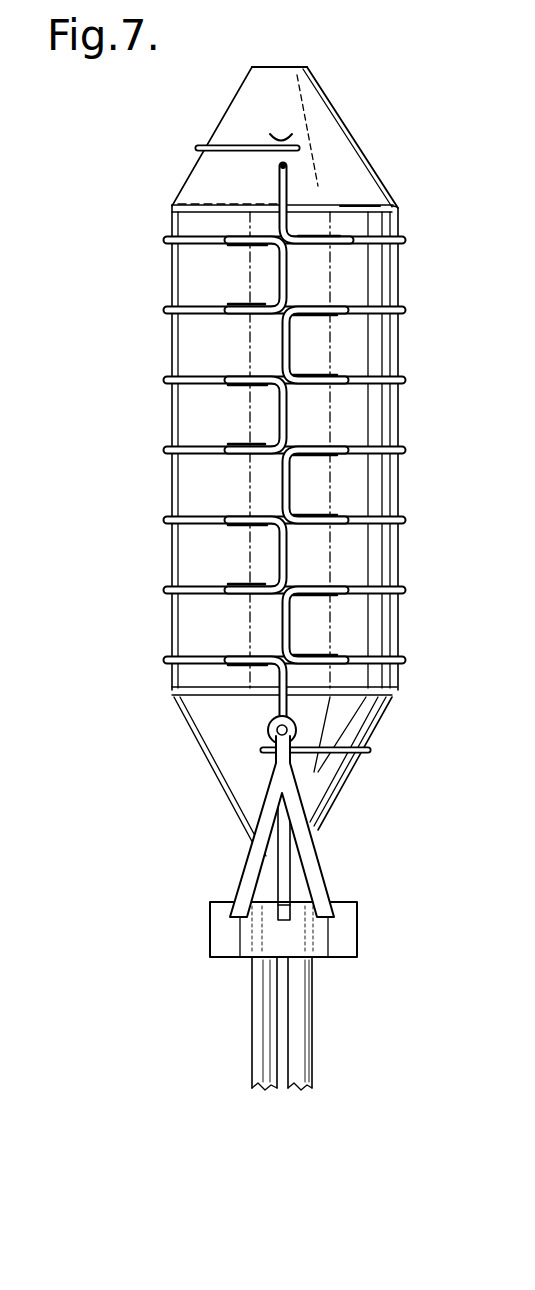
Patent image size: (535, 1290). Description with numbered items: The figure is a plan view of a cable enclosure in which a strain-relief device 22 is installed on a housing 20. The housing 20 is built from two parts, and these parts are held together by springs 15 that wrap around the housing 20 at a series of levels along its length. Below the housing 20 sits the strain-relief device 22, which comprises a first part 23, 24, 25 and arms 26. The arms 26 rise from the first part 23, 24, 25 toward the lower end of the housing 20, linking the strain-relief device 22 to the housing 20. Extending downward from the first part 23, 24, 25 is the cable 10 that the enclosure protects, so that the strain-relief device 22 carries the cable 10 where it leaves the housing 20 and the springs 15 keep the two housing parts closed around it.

The rod 10 is at (292, 1078).
The springs 15 is at (190, 306).
The housing 20 is at (205, 690).
The strain-relief device 22 is at (259, 934).
The first part 23 is at (275, 940).
The first part 24 is at (228, 940).
The first part 25 is at (340, 945).
The arms 26 is at (285, 852).